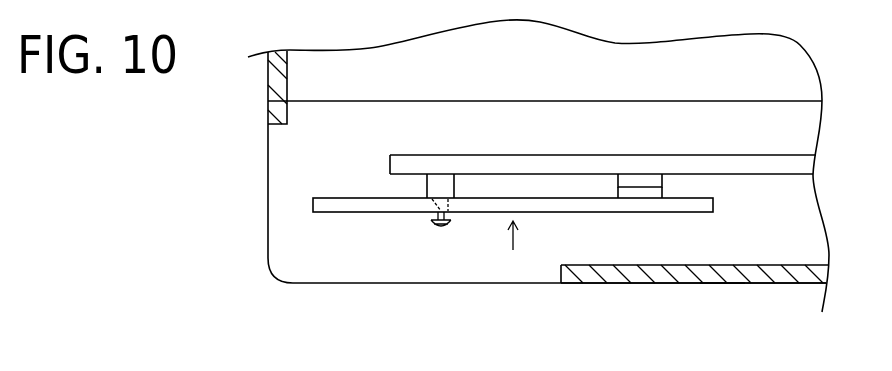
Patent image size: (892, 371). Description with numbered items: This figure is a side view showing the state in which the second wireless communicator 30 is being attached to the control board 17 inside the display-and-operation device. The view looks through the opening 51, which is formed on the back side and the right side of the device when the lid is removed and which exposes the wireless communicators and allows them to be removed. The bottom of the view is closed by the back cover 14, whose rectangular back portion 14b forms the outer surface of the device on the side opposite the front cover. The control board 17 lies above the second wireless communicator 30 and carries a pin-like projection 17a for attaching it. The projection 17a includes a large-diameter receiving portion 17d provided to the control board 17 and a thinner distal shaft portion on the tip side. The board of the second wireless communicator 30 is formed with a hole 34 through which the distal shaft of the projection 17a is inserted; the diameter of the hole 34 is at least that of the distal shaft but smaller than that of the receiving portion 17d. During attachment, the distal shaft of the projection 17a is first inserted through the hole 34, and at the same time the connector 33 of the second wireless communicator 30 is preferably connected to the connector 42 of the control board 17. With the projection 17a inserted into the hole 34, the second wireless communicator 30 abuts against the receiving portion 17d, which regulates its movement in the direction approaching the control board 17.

The opening 51 is at (288, 181).
The control board 17 is at (547, 153).
The receiving portion 17d is at (450, 186).
The projection 17a is at (451, 226).
The connector 42 is at (645, 184).
The connector 33 is at (642, 192).
The second wireless communicator 30 is at (351, 214).
The hole 34 is at (432, 228).
The back cover 14 is at (630, 286).
The back portion 14b is at (722, 285).